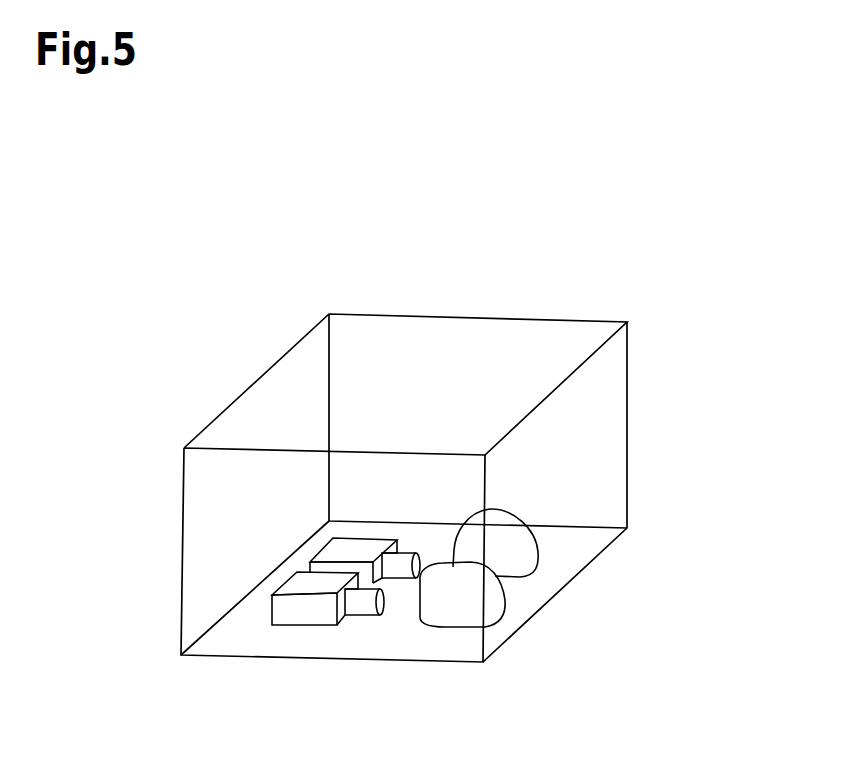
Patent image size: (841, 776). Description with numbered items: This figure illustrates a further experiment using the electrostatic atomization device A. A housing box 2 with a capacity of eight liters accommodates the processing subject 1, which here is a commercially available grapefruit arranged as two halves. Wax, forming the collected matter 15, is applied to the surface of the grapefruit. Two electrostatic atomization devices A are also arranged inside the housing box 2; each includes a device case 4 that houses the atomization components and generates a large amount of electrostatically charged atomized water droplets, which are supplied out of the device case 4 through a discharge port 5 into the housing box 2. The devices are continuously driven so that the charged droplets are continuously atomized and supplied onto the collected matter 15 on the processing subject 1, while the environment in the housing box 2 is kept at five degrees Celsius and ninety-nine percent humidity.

The processing subject 1 is at (533, 573).
The housing box 2 is at (511, 320).
The device case 4 is at (351, 542).
The discharge port 5 is at (419, 583).
The collected matter 15 is at (447, 572).
The electrostatic atomization device A is at (318, 552).